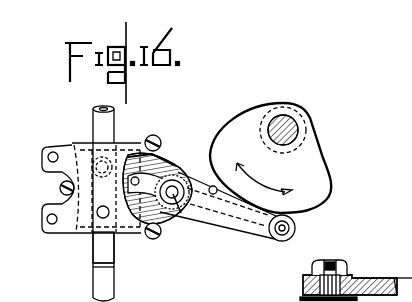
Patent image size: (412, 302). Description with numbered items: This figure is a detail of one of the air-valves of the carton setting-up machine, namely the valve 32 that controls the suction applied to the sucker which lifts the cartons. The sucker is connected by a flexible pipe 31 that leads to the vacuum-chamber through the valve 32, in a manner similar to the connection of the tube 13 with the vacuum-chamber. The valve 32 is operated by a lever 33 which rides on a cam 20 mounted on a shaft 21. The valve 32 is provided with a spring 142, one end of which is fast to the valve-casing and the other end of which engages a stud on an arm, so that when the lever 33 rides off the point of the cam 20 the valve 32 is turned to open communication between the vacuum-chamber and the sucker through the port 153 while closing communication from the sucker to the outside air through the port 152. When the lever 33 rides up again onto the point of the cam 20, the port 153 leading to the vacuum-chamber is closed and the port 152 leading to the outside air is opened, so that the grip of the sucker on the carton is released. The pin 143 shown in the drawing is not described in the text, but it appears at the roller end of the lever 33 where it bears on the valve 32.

The tube 13 is at (100, 125).
The cam 20 is at (315, 182).
The shaft 21 is at (300, 128).
The flexible pipe 31 is at (105, 250).
The valve 32 is at (133, 143).
The lever 33 is at (227, 212).
The spring 142 is at (167, 155).
The pin 143 is at (181, 213).
The port 152 is at (100, 213).
The port 153 is at (100, 167).